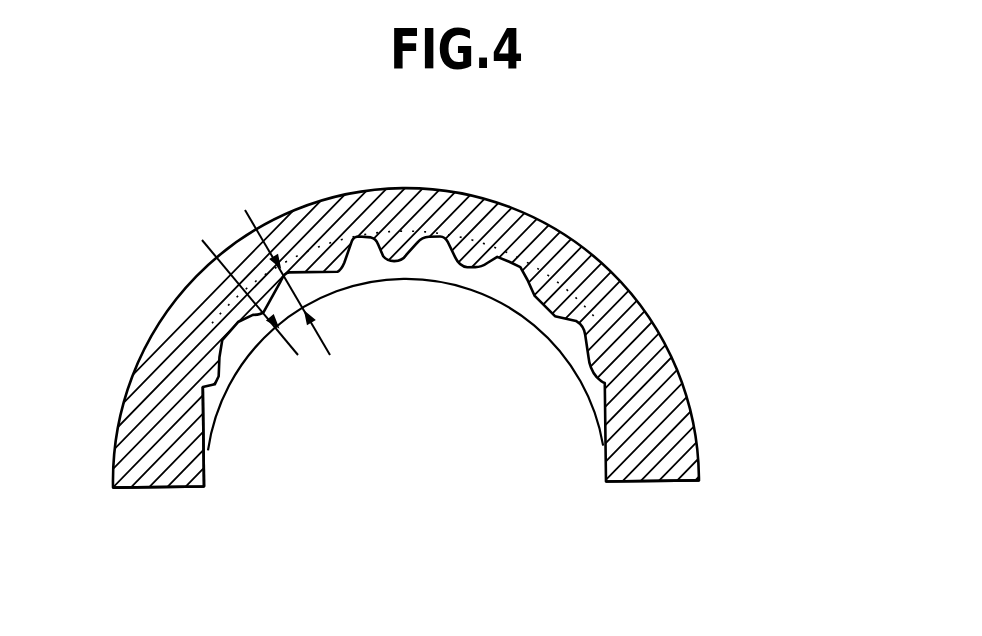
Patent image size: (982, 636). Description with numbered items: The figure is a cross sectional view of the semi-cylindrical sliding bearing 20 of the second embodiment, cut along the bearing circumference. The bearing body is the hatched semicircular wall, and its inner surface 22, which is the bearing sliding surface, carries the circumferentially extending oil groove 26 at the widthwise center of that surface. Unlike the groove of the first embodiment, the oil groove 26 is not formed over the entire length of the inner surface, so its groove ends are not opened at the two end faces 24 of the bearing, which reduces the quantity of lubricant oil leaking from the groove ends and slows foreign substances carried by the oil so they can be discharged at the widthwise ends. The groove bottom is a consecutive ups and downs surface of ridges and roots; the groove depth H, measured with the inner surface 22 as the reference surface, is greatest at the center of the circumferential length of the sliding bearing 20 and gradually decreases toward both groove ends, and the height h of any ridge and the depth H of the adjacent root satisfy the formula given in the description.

The semi-cylindrical sliding bearing 20 is at (708, 207).
The inner surface 22 is at (207, 470).
The end faces 24 is at (160, 488).
The oil groove 26 is at (441, 272).
The groove depth H is at (312, 270).
The ridge height h is at (260, 312).